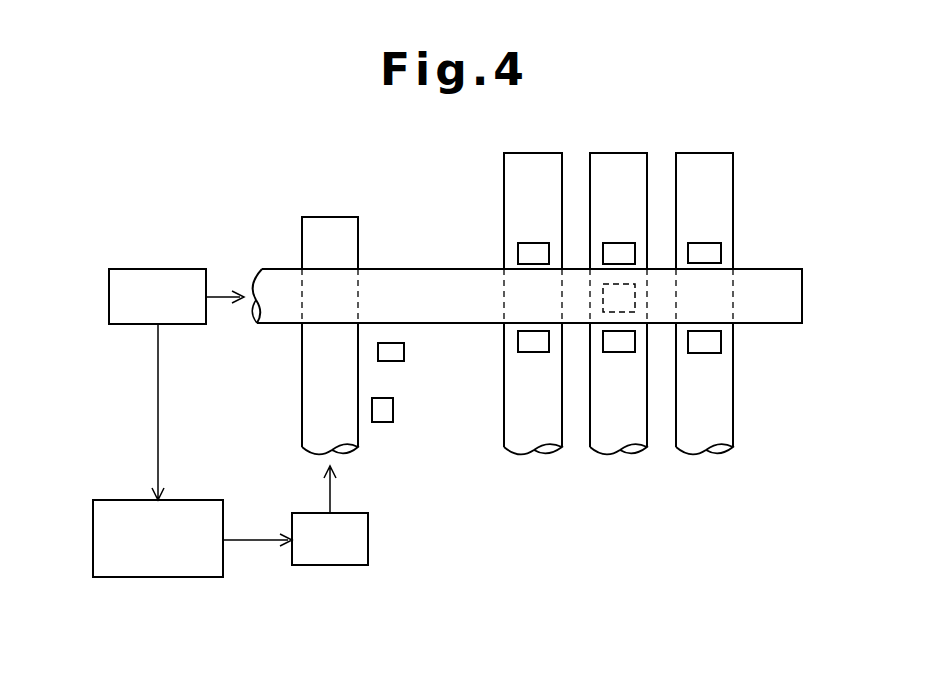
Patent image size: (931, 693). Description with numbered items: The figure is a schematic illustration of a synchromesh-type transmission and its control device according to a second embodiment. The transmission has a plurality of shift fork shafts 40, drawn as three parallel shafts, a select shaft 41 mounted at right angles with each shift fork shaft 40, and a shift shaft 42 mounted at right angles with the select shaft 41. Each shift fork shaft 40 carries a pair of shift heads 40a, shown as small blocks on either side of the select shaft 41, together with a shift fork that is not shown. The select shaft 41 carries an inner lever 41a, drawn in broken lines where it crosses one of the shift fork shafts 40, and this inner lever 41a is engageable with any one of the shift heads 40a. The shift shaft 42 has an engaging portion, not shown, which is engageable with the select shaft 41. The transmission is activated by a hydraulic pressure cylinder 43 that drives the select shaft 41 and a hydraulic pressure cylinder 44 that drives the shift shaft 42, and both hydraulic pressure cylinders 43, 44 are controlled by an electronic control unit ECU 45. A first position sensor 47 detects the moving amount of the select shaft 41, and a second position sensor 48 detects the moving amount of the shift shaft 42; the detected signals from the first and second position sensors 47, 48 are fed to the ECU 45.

The shift fork shafts 40 is at (698, 158).
The shift heads 40a is at (623, 243).
The select shaft 41 is at (446, 269).
The inner lever 41a is at (635, 296).
The shift shaft 42 is at (302, 376).
The hydraulic pressure cylinder 43 is at (150, 269).
The hydraulic pressure cylinder 44 is at (341, 565).
The electronic control unit ECU 45 is at (170, 577).
The first position sensor 47 is at (404, 352).
The second position sensor 48 is at (393, 410).